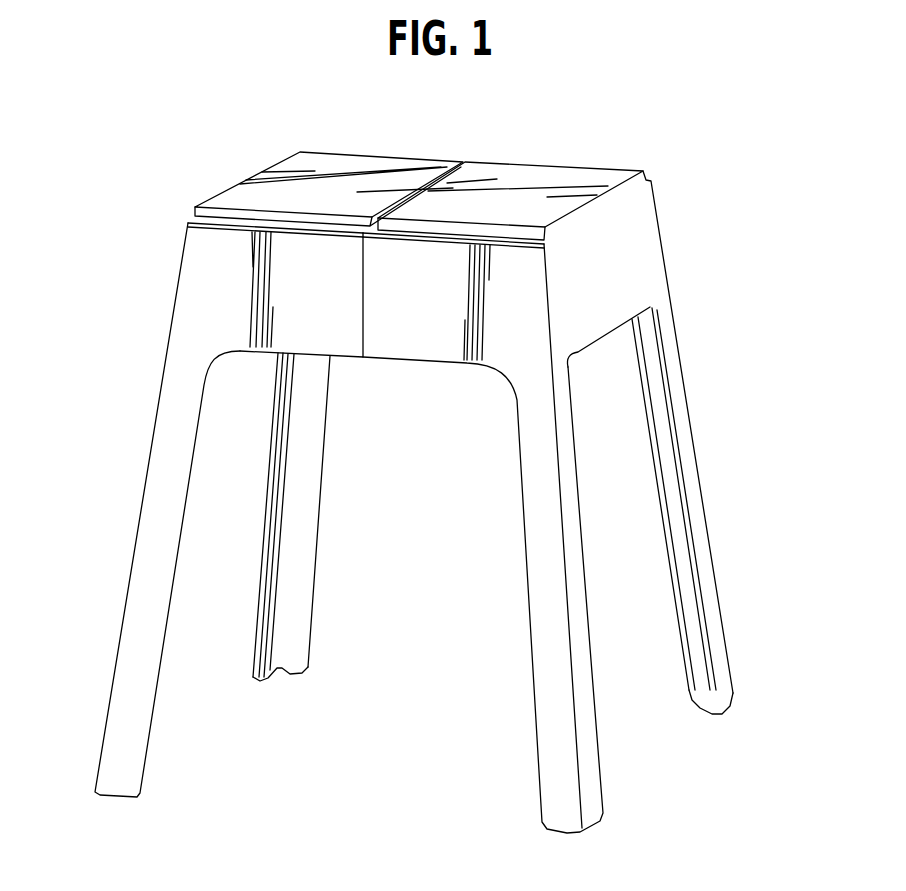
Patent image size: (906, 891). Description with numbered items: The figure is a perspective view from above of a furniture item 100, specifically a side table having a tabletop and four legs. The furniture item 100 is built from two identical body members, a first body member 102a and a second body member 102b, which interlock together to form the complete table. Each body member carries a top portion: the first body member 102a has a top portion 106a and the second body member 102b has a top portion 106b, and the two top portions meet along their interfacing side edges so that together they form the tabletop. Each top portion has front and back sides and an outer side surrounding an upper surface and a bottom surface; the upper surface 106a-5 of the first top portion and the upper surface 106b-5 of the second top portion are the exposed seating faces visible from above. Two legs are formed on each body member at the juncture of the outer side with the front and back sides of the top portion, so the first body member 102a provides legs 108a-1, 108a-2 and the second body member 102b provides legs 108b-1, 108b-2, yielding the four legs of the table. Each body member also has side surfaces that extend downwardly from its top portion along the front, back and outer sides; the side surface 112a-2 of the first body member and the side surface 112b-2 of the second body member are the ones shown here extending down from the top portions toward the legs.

The furniture item 100 is at (256, 69).
The first body member 102a is at (203, 287).
The second body member 102b is at (647, 250).
The top portion 106a is at (282, 165).
The upper surface 106a-5 is at (387, 162).
The top portion 106b is at (523, 170).
The upper surface 106b-5 is at (593, 175).
The leg 108a-1 is at (140, 627).
The leg 108a-2 is at (297, 593).
The leg 108b-1 is at (700, 550).
The leg 108b-2 is at (555, 680).
The side surface 112a-2 is at (348, 347).
The side surface 112b-2 is at (628, 247).